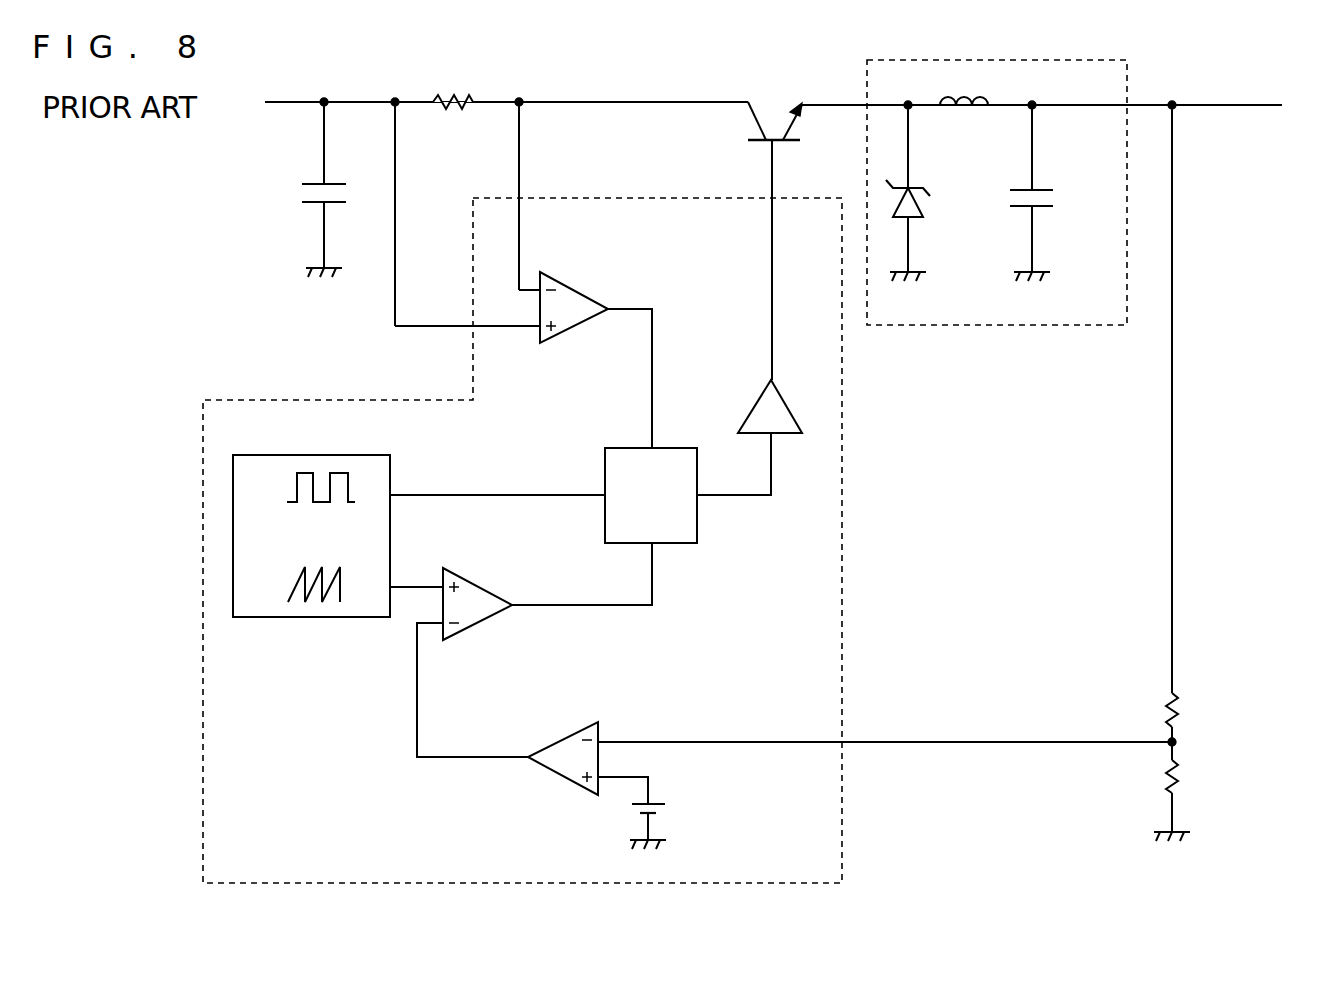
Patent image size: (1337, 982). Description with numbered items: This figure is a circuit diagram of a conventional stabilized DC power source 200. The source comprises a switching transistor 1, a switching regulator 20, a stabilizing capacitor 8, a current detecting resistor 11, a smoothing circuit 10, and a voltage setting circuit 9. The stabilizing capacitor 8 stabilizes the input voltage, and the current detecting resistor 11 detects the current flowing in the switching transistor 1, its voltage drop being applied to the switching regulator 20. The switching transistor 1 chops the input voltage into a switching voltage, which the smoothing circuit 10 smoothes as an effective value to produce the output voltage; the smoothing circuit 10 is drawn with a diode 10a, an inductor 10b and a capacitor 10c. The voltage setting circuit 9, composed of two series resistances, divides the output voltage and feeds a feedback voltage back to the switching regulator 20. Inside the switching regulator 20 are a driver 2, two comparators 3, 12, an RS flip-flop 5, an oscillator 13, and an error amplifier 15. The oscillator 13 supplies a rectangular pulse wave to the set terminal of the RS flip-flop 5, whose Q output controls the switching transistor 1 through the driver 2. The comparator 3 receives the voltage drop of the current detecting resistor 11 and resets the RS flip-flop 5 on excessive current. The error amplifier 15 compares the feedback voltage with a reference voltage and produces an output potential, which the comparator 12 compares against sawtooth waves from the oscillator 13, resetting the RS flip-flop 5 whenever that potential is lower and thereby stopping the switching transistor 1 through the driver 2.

The stabilized DC power source 200 is at (657, 55).
The switching transistor 1 is at (772, 120).
The driver 2 is at (785, 437).
The comparator 3 is at (575, 287).
The RS flip-flop 5 is at (683, 545).
The stabilizing capacitor 8 is at (300, 192).
The voltage setting circuit 9 is at (1225, 755).
The smoothing circuit 10 is at (952, 325).
The flywheel diode 10a is at (925, 213).
The inductor 10b is at (965, 113).
The output capacitor 10c is at (1047, 213).
The current detecting resistor 11 is at (455, 95).
The comparator 12 is at (477, 627).
The oscillator 13 is at (328, 618).
The error amplifier 15 is at (597, 720).
The switching regulator 20 is at (843, 505).